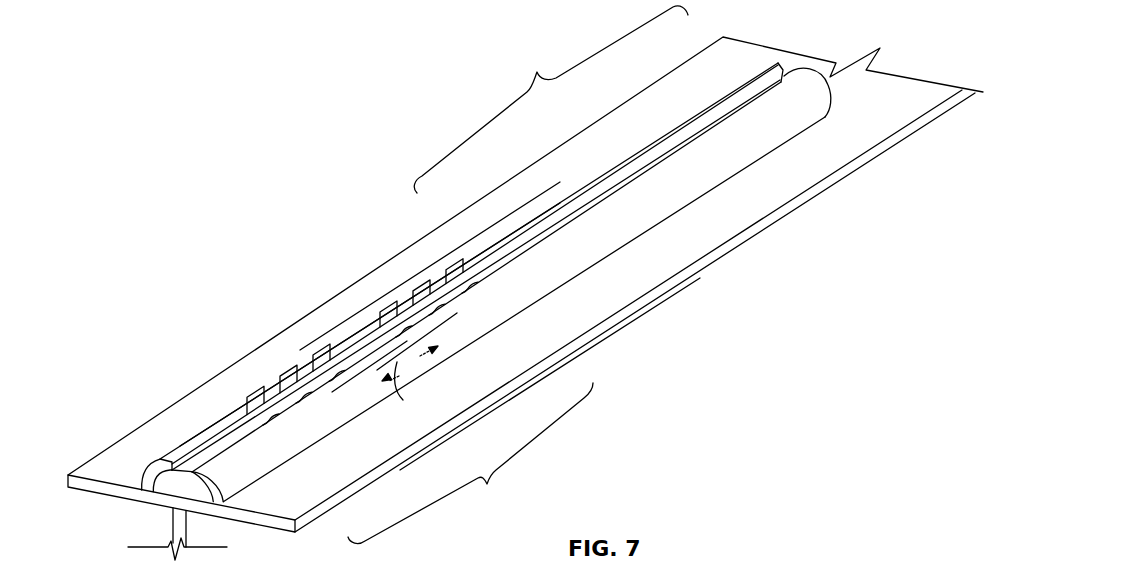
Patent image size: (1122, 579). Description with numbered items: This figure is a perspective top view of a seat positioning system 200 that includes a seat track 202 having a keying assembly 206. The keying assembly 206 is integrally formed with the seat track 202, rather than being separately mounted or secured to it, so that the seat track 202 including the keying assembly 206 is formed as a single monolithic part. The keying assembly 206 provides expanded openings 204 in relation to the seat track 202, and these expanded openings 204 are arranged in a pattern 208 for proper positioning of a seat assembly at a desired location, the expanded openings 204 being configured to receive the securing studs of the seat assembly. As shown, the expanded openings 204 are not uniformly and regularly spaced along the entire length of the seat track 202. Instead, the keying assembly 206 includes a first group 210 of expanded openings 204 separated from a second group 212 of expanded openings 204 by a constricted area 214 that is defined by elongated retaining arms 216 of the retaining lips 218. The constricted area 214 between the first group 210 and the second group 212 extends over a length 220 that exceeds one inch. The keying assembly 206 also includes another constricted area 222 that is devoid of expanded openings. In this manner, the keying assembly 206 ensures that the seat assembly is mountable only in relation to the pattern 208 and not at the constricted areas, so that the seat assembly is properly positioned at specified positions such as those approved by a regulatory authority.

The seat positioning system 200 is at (525, 283).
The seat track 202 is at (818, 122).
The expanded openings 204 is at (466, 271).
The keying assembly 206 is at (471, 267).
The pattern 208 is at (470, 463).
The first group 210 is at (319, 400).
The second group 212 is at (453, 310).
The constricted area 214 is at (420, 373).
The elongated retaining arms 216 is at (365, 325).
The retaining lips 218 is at (418, 248).
The length 220 is at (403, 400).
The constricted area 222 is at (551, 99).